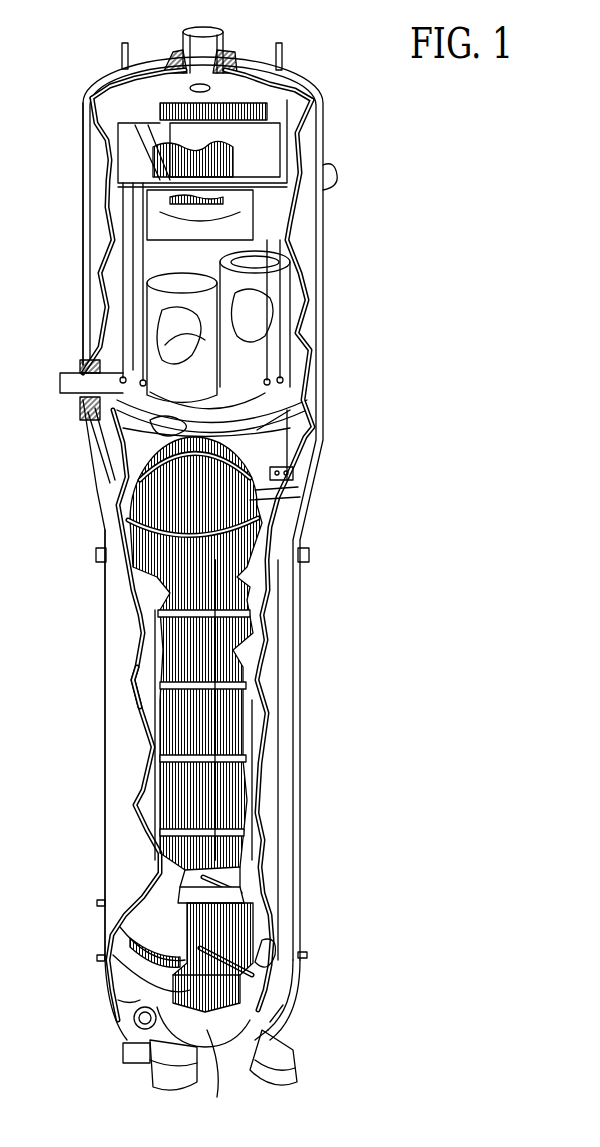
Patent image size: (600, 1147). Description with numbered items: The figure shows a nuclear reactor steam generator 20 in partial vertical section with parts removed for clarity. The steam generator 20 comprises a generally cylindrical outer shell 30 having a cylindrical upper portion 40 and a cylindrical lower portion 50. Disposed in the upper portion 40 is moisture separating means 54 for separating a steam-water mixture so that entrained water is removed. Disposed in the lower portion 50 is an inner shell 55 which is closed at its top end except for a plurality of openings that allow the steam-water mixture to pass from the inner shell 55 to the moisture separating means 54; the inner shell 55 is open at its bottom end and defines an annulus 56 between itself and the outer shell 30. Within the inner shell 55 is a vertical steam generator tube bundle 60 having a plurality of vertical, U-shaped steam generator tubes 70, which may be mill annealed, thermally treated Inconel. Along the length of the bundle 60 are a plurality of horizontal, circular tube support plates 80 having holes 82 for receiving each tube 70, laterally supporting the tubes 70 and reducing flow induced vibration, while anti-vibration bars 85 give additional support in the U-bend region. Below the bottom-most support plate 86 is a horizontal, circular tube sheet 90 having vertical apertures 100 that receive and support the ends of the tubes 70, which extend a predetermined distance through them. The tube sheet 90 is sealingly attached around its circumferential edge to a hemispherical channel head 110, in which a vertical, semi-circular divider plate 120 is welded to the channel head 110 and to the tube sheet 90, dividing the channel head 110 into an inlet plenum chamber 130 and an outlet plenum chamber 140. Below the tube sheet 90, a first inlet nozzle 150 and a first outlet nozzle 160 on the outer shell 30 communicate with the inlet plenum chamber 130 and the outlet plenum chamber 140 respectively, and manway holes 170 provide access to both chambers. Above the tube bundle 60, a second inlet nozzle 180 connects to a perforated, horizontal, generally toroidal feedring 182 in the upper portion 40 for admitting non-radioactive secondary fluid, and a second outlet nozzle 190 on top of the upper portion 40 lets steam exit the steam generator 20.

The steam generator 20 is at (357, 328).
The outer shell 30 is at (324, 247).
The upper portion 40 is at (92, 182).
The lower portion 50 is at (113, 787).
The moisture separating means 54 is at (258, 155).
The inner shell 55 is at (283, 606).
The annulus 56 is at (137, 710).
The steam generator tube bundle 60 is at (222, 806).
The steam generator tubes 70 is at (265, 697).
The tube support plates 80 is at (165, 668).
The holes 82 is at (242, 885).
The anti-vibration bars 85 is at (300, 495).
The bottom-most support plate 86 is at (250, 895).
The tube sheet 90 is at (130, 975).
The apertures 100 is at (265, 982).
The channel head 110 is at (293, 1006).
The divider plate 120 is at (222, 1097).
The inlet plenum chamber 130 is at (278, 1020).
The outlet plenum chamber 140 is at (130, 1004).
The first inlet nozzle 150 is at (277, 1072).
The first outlet nozzle 160 is at (165, 1078).
The manway holes 170 is at (133, 1028).
The second inlet nozzle 180 is at (82, 412).
The feedring 182 is at (100, 445).
The second outlet nozzle 190 is at (230, 56).